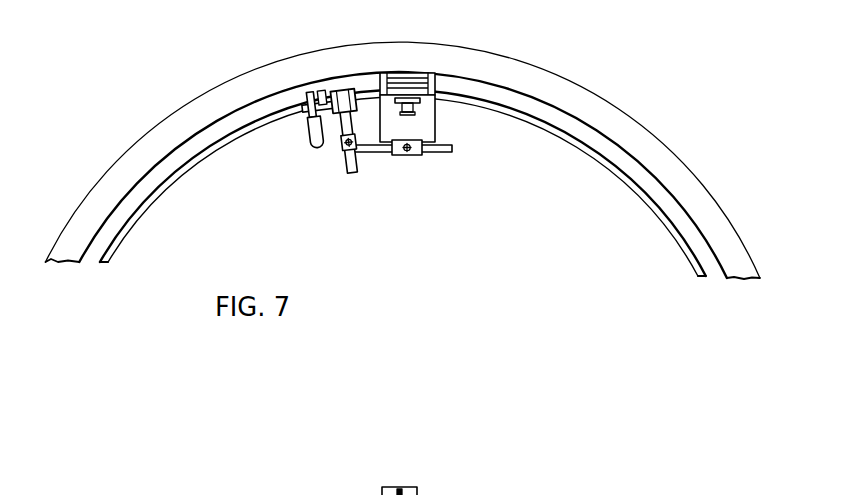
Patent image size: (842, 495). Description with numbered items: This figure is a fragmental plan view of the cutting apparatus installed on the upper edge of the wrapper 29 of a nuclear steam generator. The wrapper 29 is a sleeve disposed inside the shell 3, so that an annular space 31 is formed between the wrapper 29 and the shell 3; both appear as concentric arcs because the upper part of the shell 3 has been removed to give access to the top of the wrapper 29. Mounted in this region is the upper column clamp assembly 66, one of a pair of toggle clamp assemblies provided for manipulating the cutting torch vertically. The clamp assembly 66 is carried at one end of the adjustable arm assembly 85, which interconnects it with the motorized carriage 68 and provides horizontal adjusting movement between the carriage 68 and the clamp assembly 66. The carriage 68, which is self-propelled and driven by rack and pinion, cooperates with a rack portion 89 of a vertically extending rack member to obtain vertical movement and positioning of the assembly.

The shell 3 is at (72, 233).
The annular space 31 is at (133, 210).
The wrapper 29 is at (132, 223).
The upper column clamp assembly 66 is at (352, 88).
The motorized carriage 68 is at (437, 120).
The adjustable arm assembly 85 is at (347, 122).
The rack portion 89 is at (400, 487).